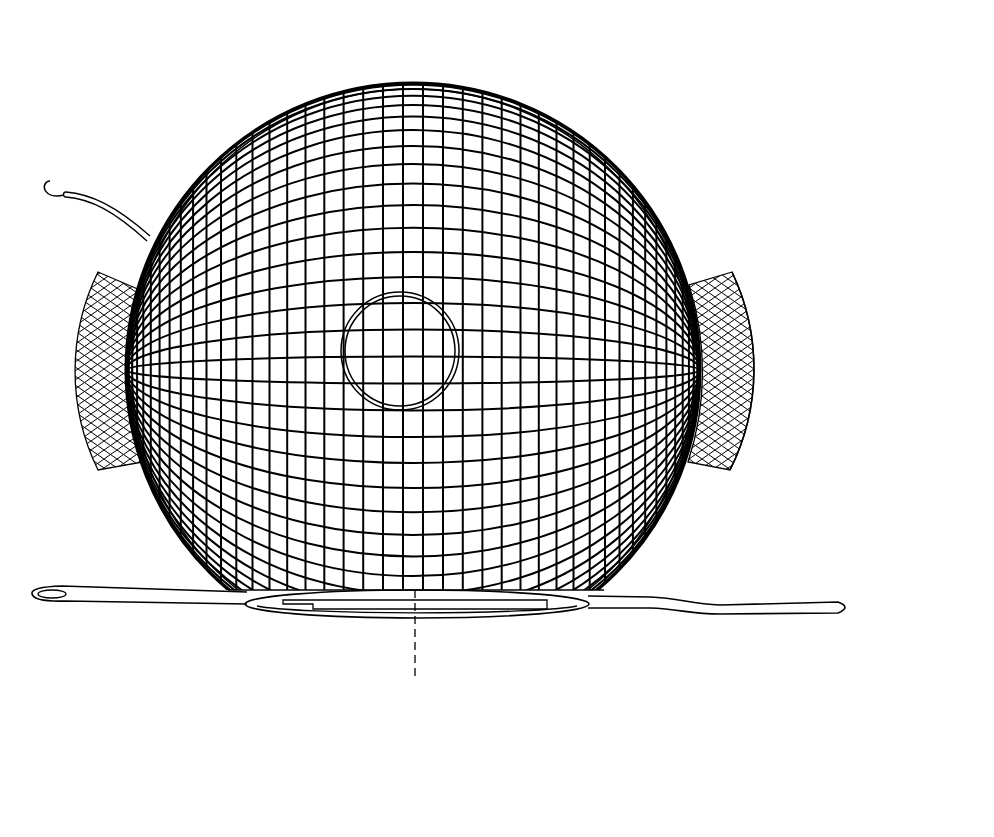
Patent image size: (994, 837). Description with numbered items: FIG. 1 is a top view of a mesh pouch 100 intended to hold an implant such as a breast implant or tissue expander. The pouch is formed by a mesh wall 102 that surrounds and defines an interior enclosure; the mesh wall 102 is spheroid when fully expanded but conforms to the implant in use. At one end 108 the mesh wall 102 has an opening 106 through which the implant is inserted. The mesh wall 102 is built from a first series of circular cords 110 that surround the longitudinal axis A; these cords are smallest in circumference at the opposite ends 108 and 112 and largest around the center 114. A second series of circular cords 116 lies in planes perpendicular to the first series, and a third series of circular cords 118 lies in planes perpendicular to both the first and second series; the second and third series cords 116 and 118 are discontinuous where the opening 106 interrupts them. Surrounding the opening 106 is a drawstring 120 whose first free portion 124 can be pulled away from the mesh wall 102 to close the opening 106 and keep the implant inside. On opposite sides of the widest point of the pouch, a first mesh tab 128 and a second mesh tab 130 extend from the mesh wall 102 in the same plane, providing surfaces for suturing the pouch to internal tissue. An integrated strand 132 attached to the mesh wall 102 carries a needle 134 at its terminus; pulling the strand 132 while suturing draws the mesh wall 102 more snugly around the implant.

The mesh pouch 100 is at (552, 45).
The mesh wall 102 is at (405, 82).
The opening 106 is at (349, 608).
The end 108 is at (554, 642).
The first series of circular cords 110 is at (693, 283).
The end 112 is at (450, 76).
The center 114 is at (708, 328).
The second series of circular cords 116 is at (498, 300).
The third series of circular cords 118 is at (302, 107).
The drawstring 120 is at (110, 602).
The first free portion 124 is at (803, 612).
The first mesh tab 128 is at (758, 373).
The second mesh tab 130 is at (84, 428).
The integrated strand 132 is at (122, 220).
The needle 134 is at (63, 192).
The longitudinal axis A is at (418, 674).